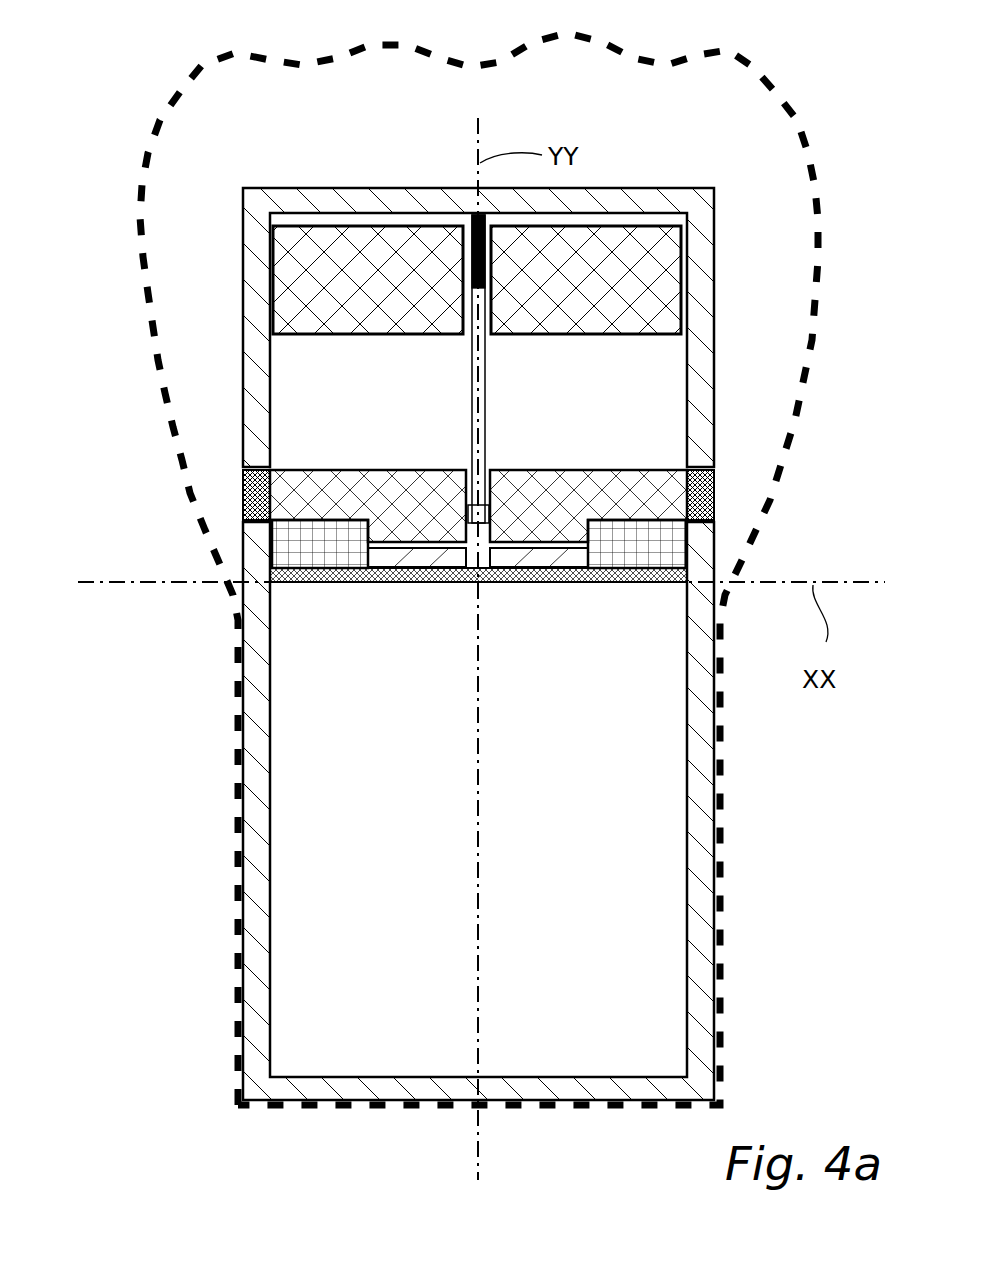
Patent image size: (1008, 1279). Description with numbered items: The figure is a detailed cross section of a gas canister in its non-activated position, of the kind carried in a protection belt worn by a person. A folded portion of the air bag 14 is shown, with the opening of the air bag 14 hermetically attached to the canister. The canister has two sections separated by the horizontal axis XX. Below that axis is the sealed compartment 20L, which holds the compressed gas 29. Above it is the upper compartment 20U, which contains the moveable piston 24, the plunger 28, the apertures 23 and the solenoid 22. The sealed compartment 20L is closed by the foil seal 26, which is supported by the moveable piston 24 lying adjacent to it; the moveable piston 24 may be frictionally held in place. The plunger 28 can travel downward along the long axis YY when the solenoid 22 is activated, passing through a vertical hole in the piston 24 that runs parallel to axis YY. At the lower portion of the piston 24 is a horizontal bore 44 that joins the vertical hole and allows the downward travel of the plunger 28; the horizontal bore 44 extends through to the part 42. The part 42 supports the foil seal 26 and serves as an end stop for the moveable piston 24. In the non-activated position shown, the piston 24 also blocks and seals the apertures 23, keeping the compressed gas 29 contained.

The air bag 14 is at (138, 200).
The upper compartment 20U is at (257, 203).
The sealed compartment 20L is at (240, 875).
The solenoid 22 is at (355, 336).
The apertures 23 is at (253, 495).
The moveable piston 24 is at (542, 482).
The foil seal 26 is at (378, 583).
The plunger 28 is at (470, 418).
The compressed gas 29 is at (592, 898).
The part 42 is at (605, 550).
The horizontal bore 44 is at (535, 555).